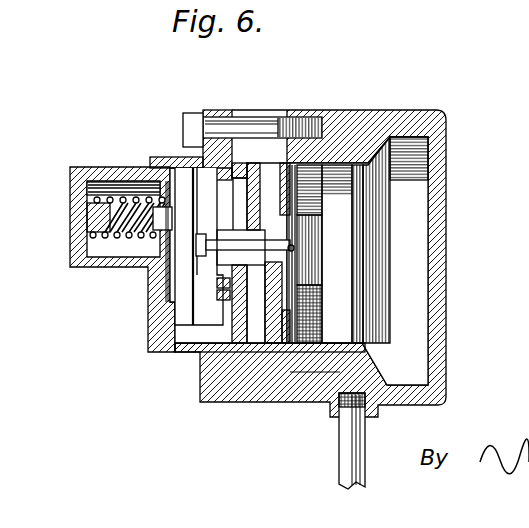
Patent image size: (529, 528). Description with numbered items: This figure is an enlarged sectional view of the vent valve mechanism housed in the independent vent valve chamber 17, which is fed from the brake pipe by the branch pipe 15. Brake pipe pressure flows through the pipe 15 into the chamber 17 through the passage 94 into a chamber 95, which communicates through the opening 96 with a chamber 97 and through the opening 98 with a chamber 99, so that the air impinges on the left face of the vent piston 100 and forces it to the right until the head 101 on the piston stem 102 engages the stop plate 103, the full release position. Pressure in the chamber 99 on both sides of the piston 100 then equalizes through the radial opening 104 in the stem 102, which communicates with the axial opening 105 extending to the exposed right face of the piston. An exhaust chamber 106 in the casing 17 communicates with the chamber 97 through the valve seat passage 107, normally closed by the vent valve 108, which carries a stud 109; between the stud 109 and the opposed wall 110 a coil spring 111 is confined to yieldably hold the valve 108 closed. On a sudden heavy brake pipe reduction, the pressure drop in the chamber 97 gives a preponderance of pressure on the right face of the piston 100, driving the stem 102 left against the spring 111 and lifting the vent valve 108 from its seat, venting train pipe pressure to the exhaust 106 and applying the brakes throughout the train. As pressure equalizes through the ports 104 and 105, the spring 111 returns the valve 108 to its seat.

The branch pipe 15 is at (350, 435).
The vent valve chamber 17 is at (438, 117).
The passage 94 is at (308, 372).
The chamber 95 is at (243, 400).
The opening 96 is at (232, 325).
The chamber 97 is at (210, 318).
The opening 98 is at (222, 355).
The chamber 99 is at (348, 167).
The vent piston 100 is at (342, 167).
The head 101 is at (197, 251).
The piston stem 102 is at (223, 262).
The stop plate 103 is at (200, 300).
The radial opening 104 is at (272, 248).
The axial opening 105 is at (298, 256).
The exhaust chamber 106 is at (282, 137).
The valve seat passage 107 is at (225, 175).
The vent valve 108 is at (152, 162).
The stud 109 is at (142, 233).
The opposed wall 110 is at (75, 235).
The coil spring 111 is at (105, 186).